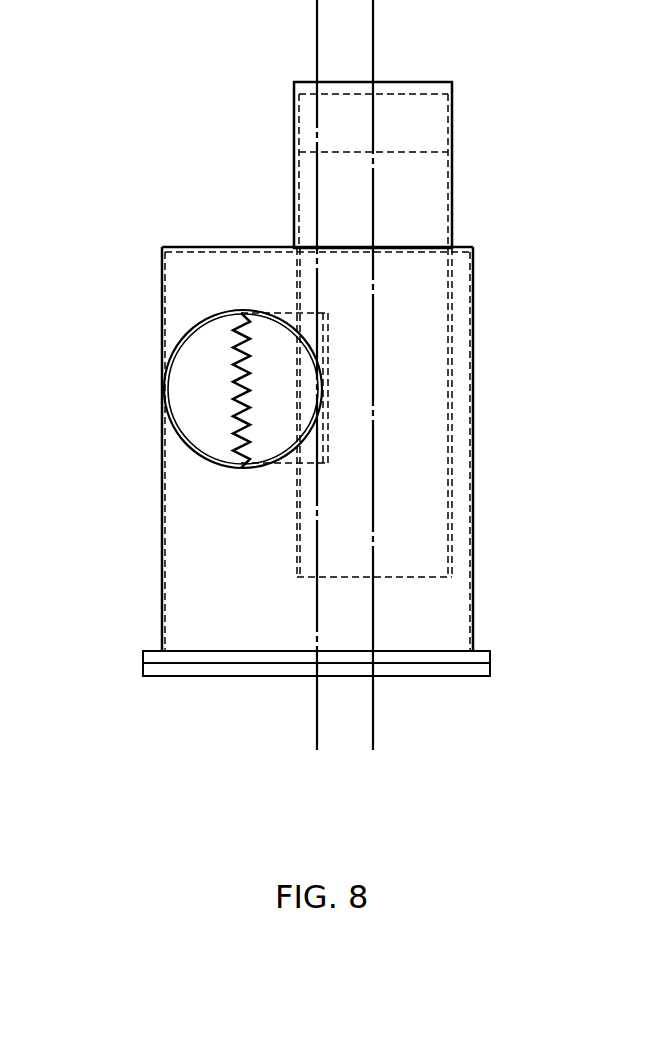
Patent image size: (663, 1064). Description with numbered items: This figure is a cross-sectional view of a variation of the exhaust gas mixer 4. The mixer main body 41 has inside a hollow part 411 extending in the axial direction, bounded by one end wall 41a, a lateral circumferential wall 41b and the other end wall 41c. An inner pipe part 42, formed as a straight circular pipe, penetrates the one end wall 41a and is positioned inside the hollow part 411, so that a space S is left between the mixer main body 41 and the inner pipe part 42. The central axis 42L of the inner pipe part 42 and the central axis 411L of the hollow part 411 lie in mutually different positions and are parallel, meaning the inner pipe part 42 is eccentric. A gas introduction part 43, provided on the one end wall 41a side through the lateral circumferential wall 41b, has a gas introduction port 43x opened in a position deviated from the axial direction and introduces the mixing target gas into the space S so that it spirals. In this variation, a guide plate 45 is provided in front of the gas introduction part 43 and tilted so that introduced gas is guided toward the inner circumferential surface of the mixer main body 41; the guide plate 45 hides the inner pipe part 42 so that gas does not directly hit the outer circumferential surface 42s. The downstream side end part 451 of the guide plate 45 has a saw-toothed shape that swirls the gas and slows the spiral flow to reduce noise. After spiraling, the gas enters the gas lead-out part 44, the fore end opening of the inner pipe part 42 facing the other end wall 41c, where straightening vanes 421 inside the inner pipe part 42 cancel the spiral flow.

The exhaust gas mixer 4 is at (150, 104).
The central axis of the hollow part 411L is at (315, 45).
The central axis of the inner pipe part 42L is at (375, 45).
The inner pipe part 42 is at (452, 445).
The outer circumferential surface of the inner pipe part 42s is at (296, 543).
The straightening vanes 421 is at (410, 152).
The gas lead-out part 44 is at (388, 588).
The mixer main body 41 is at (160, 278).
The one end wall 41a is at (228, 247).
The lateral circumferential wall 41b is at (160, 470).
The hollow part 411 is at (231, 583).
The space S is at (189, 496).
The other end wall 41c is at (262, 677).
The gas introduction part 43 is at (242, 470).
The gas introduction port 43x is at (194, 413).
The guide plate 45 is at (262, 343).
The downstream side end part 451 is at (233, 368).